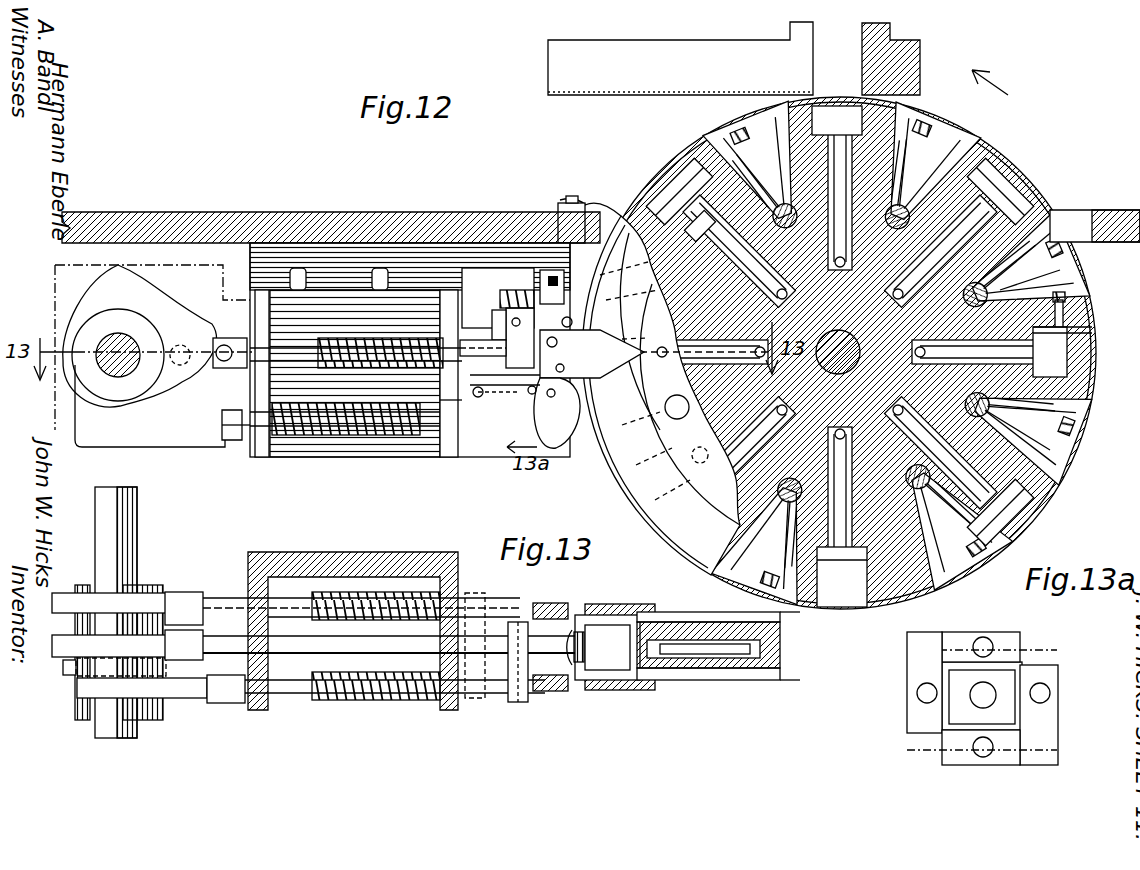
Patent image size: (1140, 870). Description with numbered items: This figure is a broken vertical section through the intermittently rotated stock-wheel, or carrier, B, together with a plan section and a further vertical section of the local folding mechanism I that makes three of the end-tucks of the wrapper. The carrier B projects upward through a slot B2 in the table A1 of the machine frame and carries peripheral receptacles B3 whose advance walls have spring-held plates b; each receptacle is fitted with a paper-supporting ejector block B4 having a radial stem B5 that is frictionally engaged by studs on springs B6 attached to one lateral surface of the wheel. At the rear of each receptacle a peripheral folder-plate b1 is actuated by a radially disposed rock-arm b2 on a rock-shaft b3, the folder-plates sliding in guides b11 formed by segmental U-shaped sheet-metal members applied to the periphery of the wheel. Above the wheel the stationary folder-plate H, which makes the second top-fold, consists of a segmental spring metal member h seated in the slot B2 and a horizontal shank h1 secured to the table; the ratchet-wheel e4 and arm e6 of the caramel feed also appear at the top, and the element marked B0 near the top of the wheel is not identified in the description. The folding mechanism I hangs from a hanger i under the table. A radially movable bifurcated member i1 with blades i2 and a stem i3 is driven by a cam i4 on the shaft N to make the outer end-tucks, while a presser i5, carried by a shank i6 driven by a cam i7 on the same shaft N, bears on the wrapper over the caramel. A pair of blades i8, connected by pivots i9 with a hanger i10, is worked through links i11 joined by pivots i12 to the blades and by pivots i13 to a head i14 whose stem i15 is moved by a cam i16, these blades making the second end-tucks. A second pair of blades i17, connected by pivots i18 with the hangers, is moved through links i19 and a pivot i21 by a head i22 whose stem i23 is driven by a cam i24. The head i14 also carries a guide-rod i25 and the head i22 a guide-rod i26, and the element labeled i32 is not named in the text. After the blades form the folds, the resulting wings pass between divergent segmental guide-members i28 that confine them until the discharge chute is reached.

In FIG. 12, the ratchet-wheel e4 is at (652, 82).
In FIG. 12, the arm e6 is at (893, 42).
In FIG. 12, the rotary stock-wheel B is at (1050, 470).
In FIG. 13, the rotary stock-wheel B is at (760, 660).
In FIG. 12, the drum head block B0 is at (837, 120).
In FIG. 12, the slot B2 is at (1078, 222).
In FIG. 12, the peripheral receptacles B3 is at (1003, 532).
In FIG. 12, the ejector blocks B4 is at (1028, 182).
In FIG. 13, the ejector blocks B4 is at (603, 647).
In FIG. 12, the radial stems B5 is at (862, 470).
In FIG. 13, the radial stems B5 is at (715, 665).
In FIG. 13, the springs B6 is at (700, 622).
In FIG. 12, the spring-held plate b is at (655, 215).
In FIG. 12, the peripheral folder-plate b1 is at (745, 150).
In FIG. 12, the rock-arm b2 is at (760, 175).
In FIG. 12, the rock-shaft b3 is at (788, 145).
In FIG. 12, the guides b11 is at (912, 120).
In FIG. 13, the guides b11 is at (700, 586).
In FIG. 12, the table A1 is at (350, 212).
In FIG. 12, the stationary folder-plate H is at (580, 203).
In FIG. 12, the segmental spring metal member h is at (585, 292).
In FIG. 12, the shank h1 is at (560, 203).
In FIG. 12, the folding mechanism I is at (410, 350).
In FIG. 12, the hanger i is at (465, 430).
In FIG. 13, the hanger i is at (452, 560).
In FIG. 13A, the bifurcated member i1 is at (982, 696).
In FIG. 13A, the blades i2 is at (1022, 670).
In FIG. 13, the stem i3 is at (210, 612).
In FIG. 12, the cam i4 is at (95, 300).
In FIG. 13, the cam i4 is at (109, 645).
In FIG. 13, the presser member i5 is at (660, 636).
In FIG. 12, the shank i6 is at (530, 420).
In FIG. 13, the shank i6 is at (556, 680).
In FIG. 13, the cam i7 is at (85, 720).
In FIG. 12, the blades i8 is at (603, 347).
In FIG. 13, the blades i8 is at (605, 625).
In FIG. 13, the pivots i9 is at (552, 603).
In FIG. 12, the hanger i10 is at (565, 292).
In FIG. 13, the hanger i10 is at (570, 620).
In FIG. 12, the links i11 is at (528, 329).
In FIG. 13A, the links i11 is at (940, 652).
In FIG. 12, the pivots i12 is at (580, 330).
In FIG. 13, the pivots i12 is at (640, 636).
In FIG. 12, the pivots i13 is at (503, 309).
In FIG. 13A, the pivots i13 is at (1022, 652).
In FIG. 12, the head i14 is at (522, 310).
In FIG. 13, the head i14 is at (520, 702).
In FIG. 13A, the head i14 is at (932, 632).
In FIG. 12, the stem i15 is at (425, 455).
In FIG. 13, the stem i15 is at (318, 690).
In FIG. 13A, the stem i15 is at (918, 689).
In FIG. 12, the cam i16 is at (168, 325).
In FIG. 13, the cam i16 is at (185, 700).
In FIG. 12, the blades i17 is at (525, 411).
In FIG. 12, the pivots i18 is at (558, 393).
In FIG. 12, the links i19 is at (496, 381).
In FIG. 13A, the links i19 is at (942, 740).
In FIG. 12, the pivot i21 is at (453, 412).
In FIG. 12, the head i22 is at (505, 400).
In FIG. 13, the head i22 is at (488, 632).
In FIG. 13, the stem i23 is at (322, 600).
In FIG. 13A, the stem i23 is at (1050, 693).
In FIG. 13, the cam i24 is at (65, 593).
In FIG. 12, the guide-rod i25 is at (470, 322).
In FIG. 13, the guide-rod i25 is at (388, 652).
In FIG. 13A, the guide-rod i25 is at (985, 645).
In FIG. 12, the guide-rod i26 is at (352, 395).
In FIG. 13A, the guide-rod i26 is at (975, 752).
In FIG. 13, the segmental guide-members i28 is at (620, 604).
In FIG. 13A, the pin i32 is at (1018, 742).
In FIG. 12, the shaft N is at (130, 395).
In FIG. 13, the shaft N is at (140, 498).